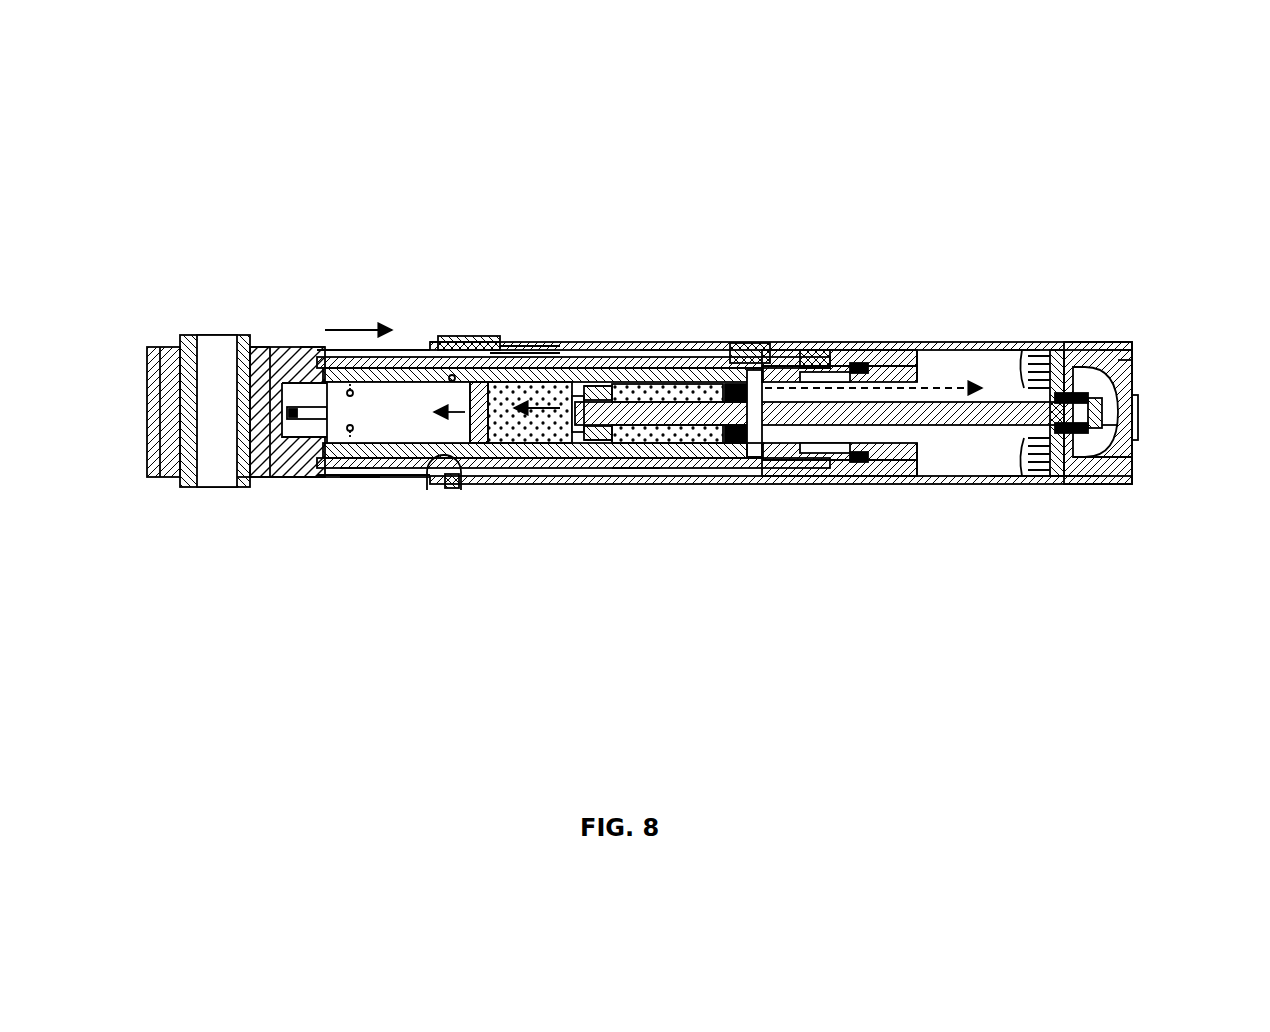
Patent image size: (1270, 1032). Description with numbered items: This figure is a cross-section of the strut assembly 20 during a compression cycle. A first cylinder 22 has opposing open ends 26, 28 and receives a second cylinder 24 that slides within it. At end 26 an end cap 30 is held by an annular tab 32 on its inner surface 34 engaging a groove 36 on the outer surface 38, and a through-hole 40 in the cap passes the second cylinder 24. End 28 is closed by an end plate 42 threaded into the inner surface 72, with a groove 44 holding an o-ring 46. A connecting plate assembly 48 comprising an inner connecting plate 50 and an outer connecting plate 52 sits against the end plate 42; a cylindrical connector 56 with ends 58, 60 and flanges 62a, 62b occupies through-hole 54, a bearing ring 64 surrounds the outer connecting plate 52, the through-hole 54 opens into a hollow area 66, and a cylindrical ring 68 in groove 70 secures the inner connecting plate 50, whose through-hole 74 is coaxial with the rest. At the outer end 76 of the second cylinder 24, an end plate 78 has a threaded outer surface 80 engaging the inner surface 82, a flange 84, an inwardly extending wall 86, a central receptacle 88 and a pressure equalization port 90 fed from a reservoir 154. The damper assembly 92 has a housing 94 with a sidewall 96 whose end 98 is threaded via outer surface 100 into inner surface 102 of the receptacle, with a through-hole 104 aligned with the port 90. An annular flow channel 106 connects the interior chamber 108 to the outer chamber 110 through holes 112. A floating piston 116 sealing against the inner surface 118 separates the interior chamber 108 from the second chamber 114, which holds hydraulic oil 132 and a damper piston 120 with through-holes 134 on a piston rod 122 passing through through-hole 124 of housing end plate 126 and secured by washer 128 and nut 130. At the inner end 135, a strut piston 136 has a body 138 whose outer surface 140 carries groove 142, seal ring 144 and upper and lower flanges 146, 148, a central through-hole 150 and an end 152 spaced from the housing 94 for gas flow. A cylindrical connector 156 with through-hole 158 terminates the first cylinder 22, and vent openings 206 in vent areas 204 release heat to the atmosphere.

The strut assembly 20 is at (700, 192).
The first cylinder 22 is at (970, 335).
The second cylinder 24 is at (322, 490).
The end 26 is at (465, 292).
The opposing end 28 is at (1115, 305).
The end cap 30 is at (445, 335).
The annular tab 32 is at (518, 346).
The inner surface 34 is at (482, 342).
The groove 36 is at (512, 352).
The outer surface 38 is at (565, 350).
The through-hole 40 is at (425, 488).
The end plate 42 is at (1140, 365).
The groove 44 is at (1130, 450).
The o-ring 46 is at (1075, 490).
The connecting plate assembly 48 is at (1062, 488).
The inner connecting plate 50 is at (1082, 345).
The outer connecting plate 52 is at (1053, 345).
The through-hole 54 is at (1020, 348).
The cylindrical connector 56 is at (1132, 375).
The end 58 is at (1000, 488).
The end 60 is at (1120, 425).
The flange 62a is at (1042, 345).
The flange 62b is at (1105, 345).
The bearing ring 64 is at (1038, 488).
The hollow area 66 is at (1115, 400).
The cylindrical ring 68 is at (1068, 345).
The groove 70 is at (1045, 488).
The inner surface 72 is at (1120, 355).
The through-hole 74 is at (1025, 488).
The outer end 76 is at (292, 305).
The end plate 78 is at (275, 348).
The outer surface 80 is at (308, 348).
The inner surface 82 is at (350, 480).
The flange 84 is at (270, 488).
The wall 86 is at (370, 488).
The central receptacle 88 is at (300, 488).
The pressure equalization port 90 is at (292, 348).
The damper assembly 92 is at (565, 488).
The housing 94 is at (697, 488).
The sidewall 96 is at (643, 488).
The end 98 is at (402, 488).
The outer surface 100 is at (503, 488).
The inner surface 102 is at (303, 348).
The through-hole 104 is at (258, 487).
The annular flow channel 106 is at (662, 345).
The interior chamber 108 is at (420, 488).
The outer chamber 110 is at (955, 345).
The holes 112 is at (356, 428).
The second chamber 114 is at (632, 488).
The floating piston 116 is at (515, 488).
The inner surface 118 is at (450, 375).
The damper piston 120 is at (605, 380).
The piston rod 122 is at (912, 345).
The through-hole 124 is at (735, 385).
The housing end plate 126 is at (755, 385).
The washer 128 is at (608, 488).
The nut 130 is at (594, 488).
The hydraulic oil 132 is at (730, 488).
The through-holes 134 is at (615, 488).
The inner end 135 is at (872, 302).
The strut piston 136 is at (893, 342).
The body 138 is at (830, 350).
The outer surface 140 is at (842, 350).
The groove 142 is at (880, 488).
The seal ring 144 is at (866, 488).
The upper flange 146 is at (793, 348).
The lower flange 148 is at (925, 348).
The central through-hole 150 is at (813, 348).
The end 152 is at (766, 488).
The reservoir 154 is at (265, 348).
The cylindrical connector 156 is at (142, 352).
The through-hole 158 is at (200, 348).
The vent areas 204 is at (487, 488).
The vent openings 206 is at (450, 488).